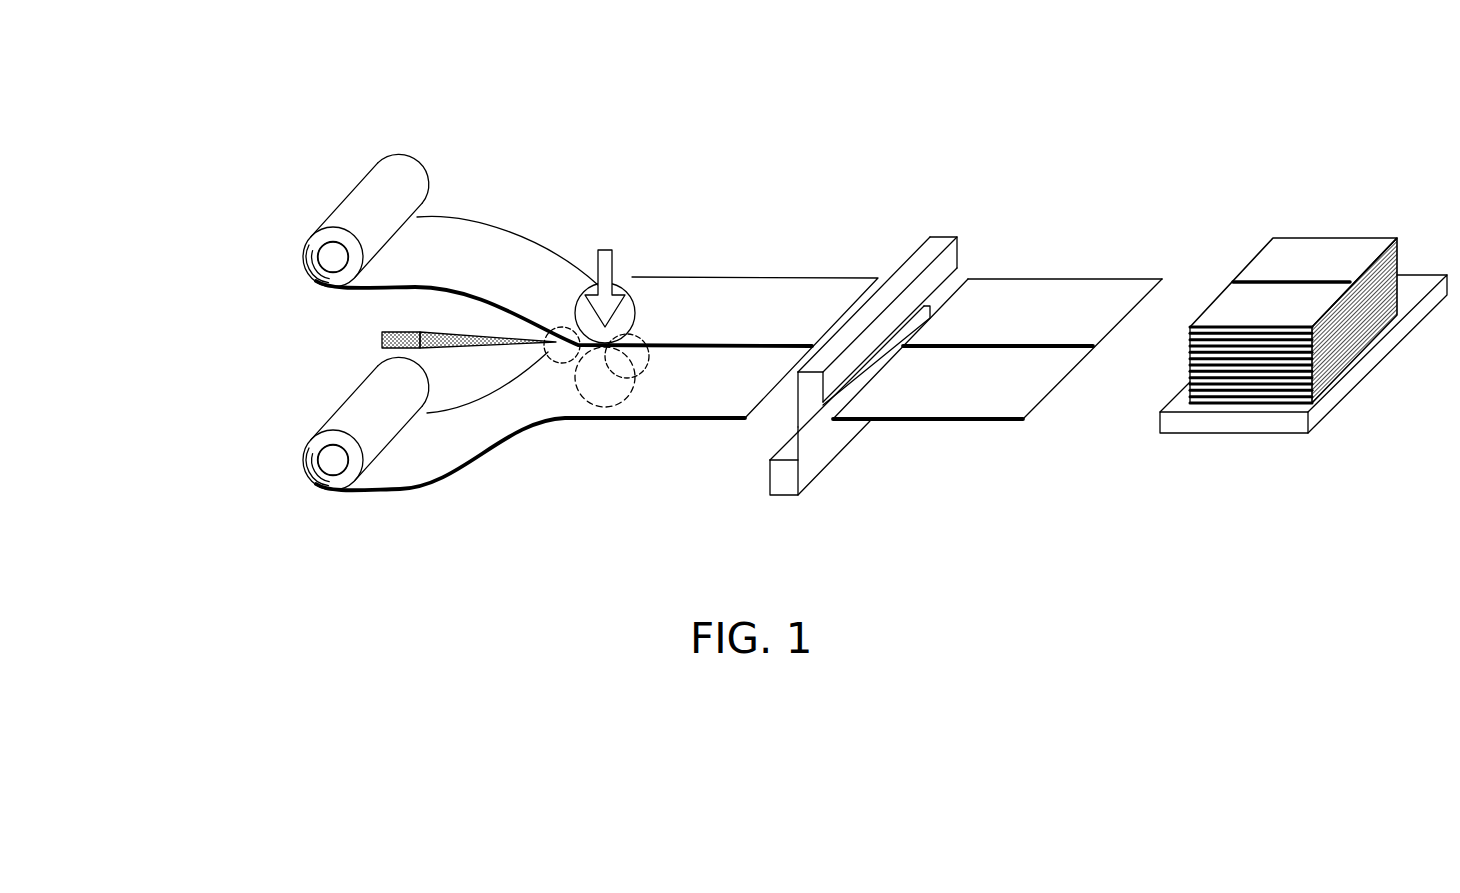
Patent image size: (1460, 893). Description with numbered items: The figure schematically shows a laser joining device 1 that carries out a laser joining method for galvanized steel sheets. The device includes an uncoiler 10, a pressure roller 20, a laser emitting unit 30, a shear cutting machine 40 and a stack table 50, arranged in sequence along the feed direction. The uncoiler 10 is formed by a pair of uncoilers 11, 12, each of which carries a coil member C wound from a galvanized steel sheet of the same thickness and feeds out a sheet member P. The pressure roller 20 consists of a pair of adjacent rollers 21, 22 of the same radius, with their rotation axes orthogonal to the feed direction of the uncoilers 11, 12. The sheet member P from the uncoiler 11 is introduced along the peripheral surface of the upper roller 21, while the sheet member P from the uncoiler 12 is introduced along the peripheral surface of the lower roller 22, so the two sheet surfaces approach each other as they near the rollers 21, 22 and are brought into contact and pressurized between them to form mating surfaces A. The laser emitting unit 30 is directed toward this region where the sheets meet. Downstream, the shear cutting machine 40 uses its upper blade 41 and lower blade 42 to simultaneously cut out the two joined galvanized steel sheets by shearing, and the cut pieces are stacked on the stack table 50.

The laser joining device 1 is at (1128, 130).
The uncoiler 10 is at (142, 425).
The uncoiler 11 is at (322, 223).
The uncoiler 12 is at (302, 470).
The coil member C is at (313, 276).
The sheet member P is at (410, 278).
The laser emitting unit 30 is at (378, 342).
The mating surfaces A is at (545, 352).
The pressure roller 20 is at (750, 152).
The upper roller 21 is at (632, 282).
The lower roller 22 is at (640, 378).
The shear cutting machine 40 is at (657, 452).
The upper blade 41 is at (802, 393).
The lower blade 42 is at (778, 472).
The stack table 50 is at (1316, 413).